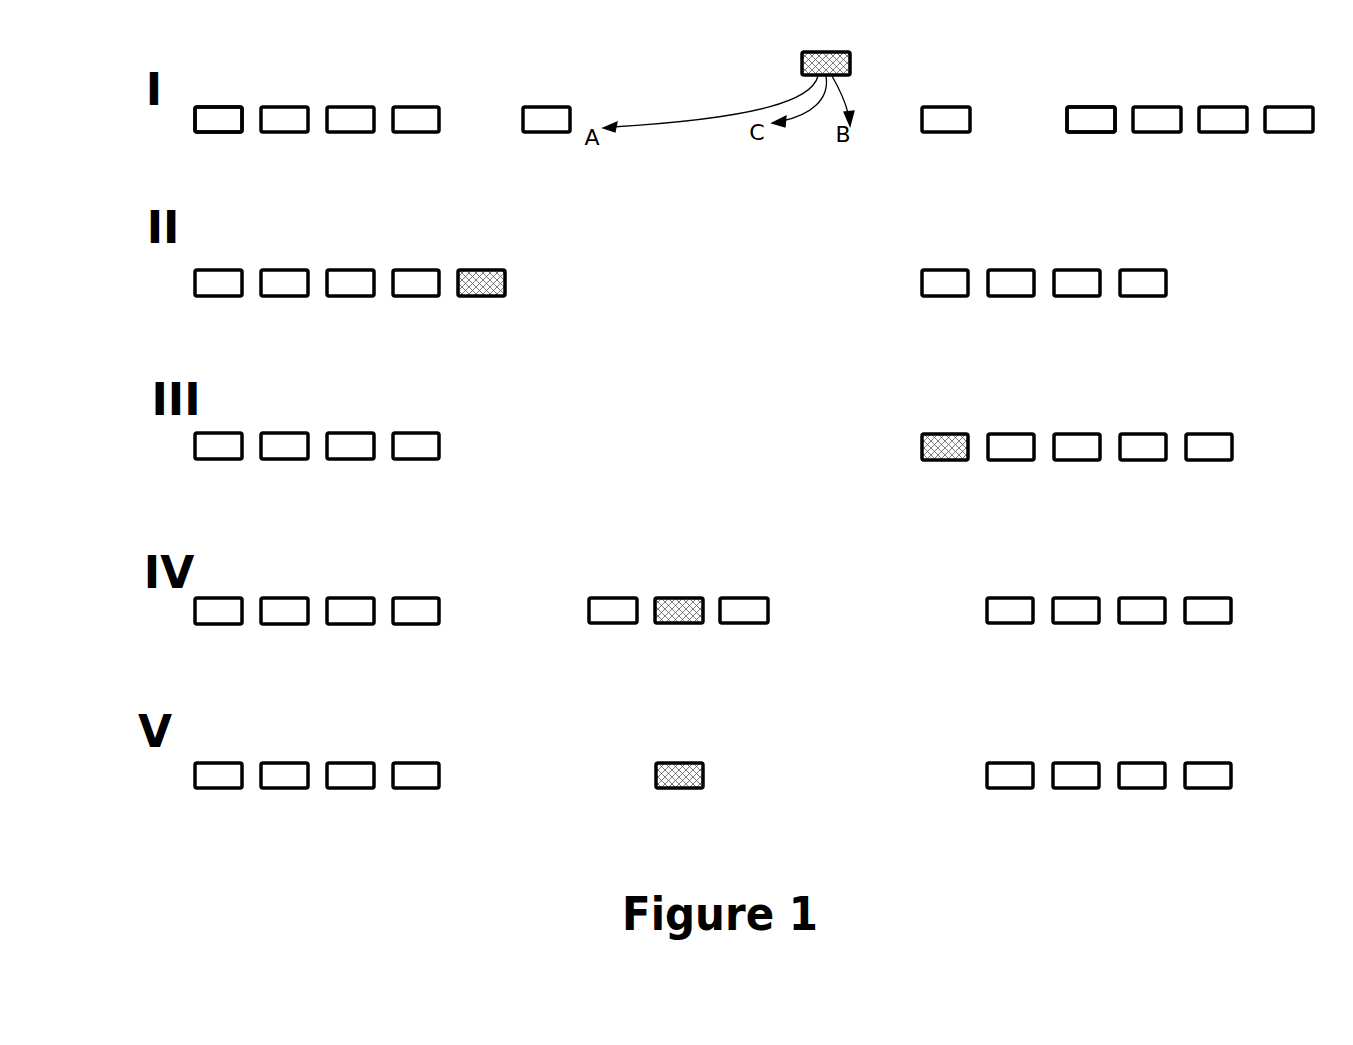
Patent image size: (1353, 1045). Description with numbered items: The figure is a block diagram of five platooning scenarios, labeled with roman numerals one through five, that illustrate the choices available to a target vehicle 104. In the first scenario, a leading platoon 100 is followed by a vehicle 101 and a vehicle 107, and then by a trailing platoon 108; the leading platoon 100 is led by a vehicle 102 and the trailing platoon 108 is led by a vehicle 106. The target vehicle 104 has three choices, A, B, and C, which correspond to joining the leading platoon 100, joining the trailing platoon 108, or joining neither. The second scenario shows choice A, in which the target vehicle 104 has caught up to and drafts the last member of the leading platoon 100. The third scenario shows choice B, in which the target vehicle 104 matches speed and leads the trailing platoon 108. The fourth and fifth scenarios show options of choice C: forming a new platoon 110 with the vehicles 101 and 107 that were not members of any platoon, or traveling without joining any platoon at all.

The leading platoon 100 is at (435, 91).
The vehicle 101 is at (543, 107).
The vehicle 102 is at (223, 108).
The target vehicle 104 is at (828, 52).
The vehicle 106 is at (1096, 108).
The vehicle 107 is at (945, 107).
The trailing platoon 108 is at (1313, 93).
The new platoon 110 is at (787, 584).